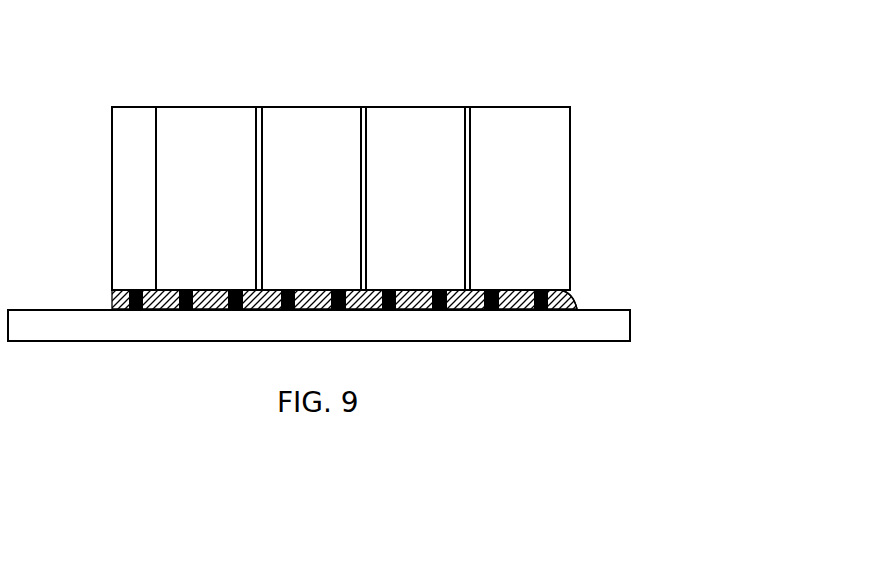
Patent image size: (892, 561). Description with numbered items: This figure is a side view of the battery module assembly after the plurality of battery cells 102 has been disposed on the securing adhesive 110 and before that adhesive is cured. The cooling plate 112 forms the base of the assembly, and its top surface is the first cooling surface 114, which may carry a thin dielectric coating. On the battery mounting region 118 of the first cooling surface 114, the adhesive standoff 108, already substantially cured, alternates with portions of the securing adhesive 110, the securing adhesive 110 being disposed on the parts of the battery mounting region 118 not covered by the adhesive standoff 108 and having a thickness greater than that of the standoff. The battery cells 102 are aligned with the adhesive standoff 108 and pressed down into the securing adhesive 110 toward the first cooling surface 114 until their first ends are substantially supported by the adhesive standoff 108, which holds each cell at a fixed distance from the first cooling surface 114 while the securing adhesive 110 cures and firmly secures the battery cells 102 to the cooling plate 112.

The battery cells 102 is at (527, 147).
The adhesive standoff 108 is at (135, 310).
The securing adhesive 110 is at (212, 310).
The cooling plate 112 is at (646, 320).
The first cooling surface 114 is at (613, 301).
The battery mounting region 118 is at (575, 308).